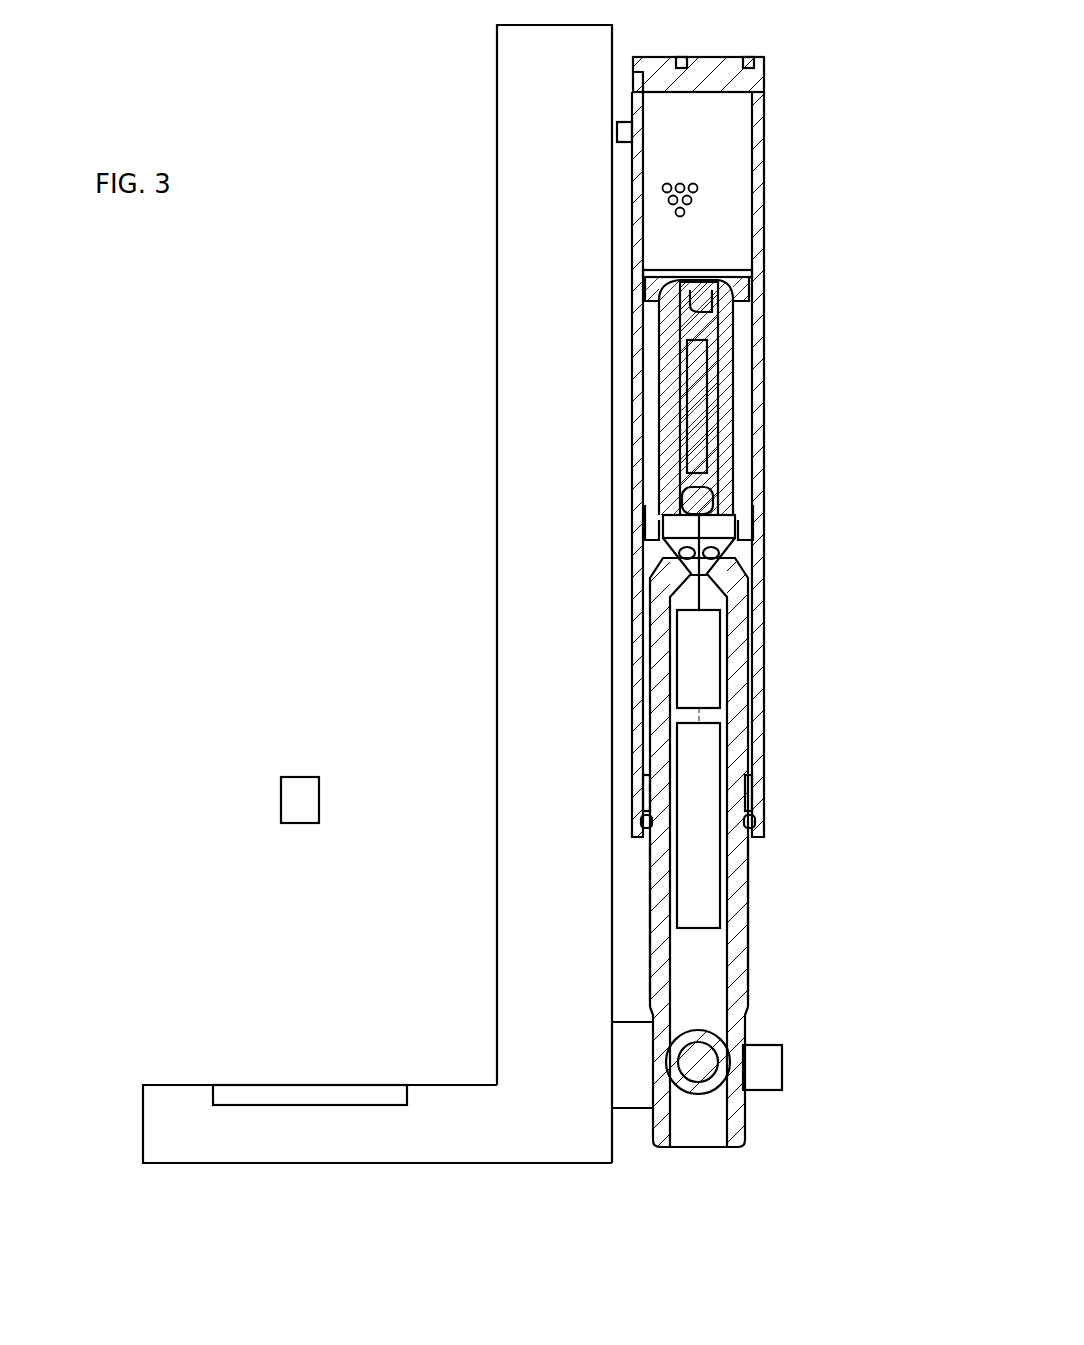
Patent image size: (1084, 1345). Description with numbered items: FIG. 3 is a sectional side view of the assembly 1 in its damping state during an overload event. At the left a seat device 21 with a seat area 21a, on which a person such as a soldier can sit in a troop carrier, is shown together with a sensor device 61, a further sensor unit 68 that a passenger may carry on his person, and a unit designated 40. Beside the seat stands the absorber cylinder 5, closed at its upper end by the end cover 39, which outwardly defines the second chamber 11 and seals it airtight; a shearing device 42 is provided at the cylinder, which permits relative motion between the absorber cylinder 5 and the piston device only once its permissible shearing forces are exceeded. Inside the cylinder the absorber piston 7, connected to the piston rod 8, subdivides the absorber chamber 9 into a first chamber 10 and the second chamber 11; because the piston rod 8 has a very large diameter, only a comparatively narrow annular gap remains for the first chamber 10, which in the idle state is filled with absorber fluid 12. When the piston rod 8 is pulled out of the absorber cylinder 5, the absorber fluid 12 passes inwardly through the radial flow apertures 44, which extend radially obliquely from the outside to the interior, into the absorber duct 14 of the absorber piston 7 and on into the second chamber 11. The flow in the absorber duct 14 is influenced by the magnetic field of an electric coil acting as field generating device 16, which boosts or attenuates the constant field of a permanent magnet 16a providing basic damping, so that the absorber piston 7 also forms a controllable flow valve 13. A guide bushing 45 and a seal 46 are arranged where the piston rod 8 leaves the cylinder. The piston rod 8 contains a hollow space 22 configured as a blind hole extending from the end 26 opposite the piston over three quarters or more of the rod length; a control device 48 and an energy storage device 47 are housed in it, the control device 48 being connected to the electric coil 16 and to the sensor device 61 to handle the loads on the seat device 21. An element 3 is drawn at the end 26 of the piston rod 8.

The lifting device 1 is at (214, 94).
The ball joint 3 is at (716, 1092).
The absorber cylinder 5 is at (766, 318).
The absorber piston 7 is at (748, 462).
The piston rod 8 is at (748, 946).
The absorber chamber 9 is at (724, 236).
The first chamber 10 is at (750, 652).
The second chamber 11 is at (728, 160).
The absorber fluid 12 is at (700, 188).
The flow valve 13 is at (818, 380).
The absorber duct 14 is at (660, 327).
The electric coil 16 is at (690, 494).
The permanent magnet 16a is at (696, 392).
The seat device 21 is at (490, 982).
The seat area 21a is at (172, 1085).
The hollow space 22 is at (702, 986).
The end opposite the piston 26 is at (712, 1158).
The end cover 39 is at (722, 60).
The frame 40 is at (335, 501).
The shearing device 42 is at (623, 120).
The radial flow aperture 44 is at (660, 563).
The guide bushing 45 is at (756, 786).
The seal 46 is at (760, 822).
The energy storage device 47 is at (752, 860).
The control device 48 is at (710, 692).
The sensor device 61 is at (288, 1092).
The sensor unit 68 is at (292, 792).